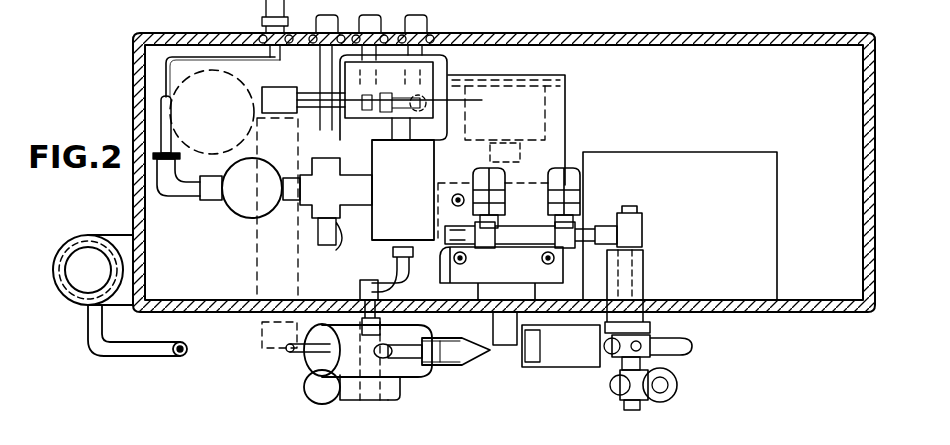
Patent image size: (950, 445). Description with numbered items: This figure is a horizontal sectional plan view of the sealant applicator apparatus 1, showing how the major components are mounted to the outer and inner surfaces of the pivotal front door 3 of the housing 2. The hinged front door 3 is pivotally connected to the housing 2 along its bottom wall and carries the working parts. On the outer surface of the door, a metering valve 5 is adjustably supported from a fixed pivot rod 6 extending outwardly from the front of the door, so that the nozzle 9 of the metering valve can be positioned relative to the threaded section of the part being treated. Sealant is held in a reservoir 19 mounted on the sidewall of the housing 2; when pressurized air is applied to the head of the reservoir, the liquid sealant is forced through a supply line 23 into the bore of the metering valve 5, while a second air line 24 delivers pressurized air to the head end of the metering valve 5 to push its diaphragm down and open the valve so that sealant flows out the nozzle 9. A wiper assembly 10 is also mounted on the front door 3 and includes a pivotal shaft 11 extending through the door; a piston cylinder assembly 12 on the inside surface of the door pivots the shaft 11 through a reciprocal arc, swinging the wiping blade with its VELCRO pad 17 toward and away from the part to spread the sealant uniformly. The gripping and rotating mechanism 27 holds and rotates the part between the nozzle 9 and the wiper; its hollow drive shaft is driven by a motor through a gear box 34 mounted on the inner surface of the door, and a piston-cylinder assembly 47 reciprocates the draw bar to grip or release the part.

The sealant applicator apparatus 1 is at (698, 325).
The housing 2 is at (132, 72).
The hinged front door 3 is at (503, 26).
The metering valve 5 is at (410, 378).
The fixed pivot rod 6 is at (365, 405).
The nozzle 9 is at (470, 365).
The wiper assembly 10 is at (590, 378).
The pivotal shaft 11 is at (630, 407).
The piston cylinder assembly 12 is at (530, 238).
The VELCRO pad 17 is at (541, 340).
The reservoir 19 is at (66, 295).
The supply line 23 is at (392, 345).
The second air line 24 is at (305, 352).
The gripping and rotating mechanism 27 is at (503, 346).
The gear box 34 is at (515, 265).
The piston-cylinder assembly 47 is at (512, 120).